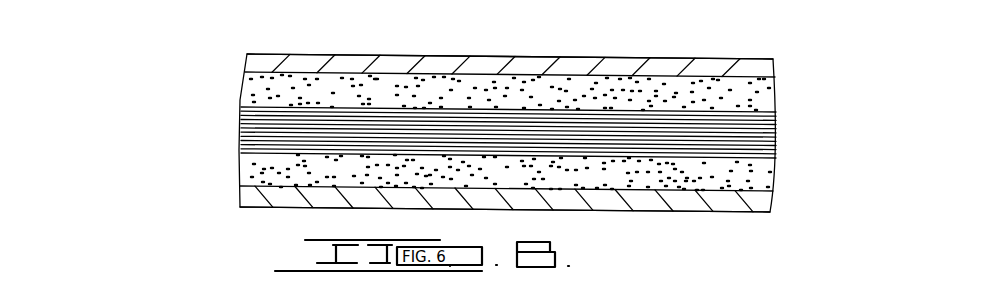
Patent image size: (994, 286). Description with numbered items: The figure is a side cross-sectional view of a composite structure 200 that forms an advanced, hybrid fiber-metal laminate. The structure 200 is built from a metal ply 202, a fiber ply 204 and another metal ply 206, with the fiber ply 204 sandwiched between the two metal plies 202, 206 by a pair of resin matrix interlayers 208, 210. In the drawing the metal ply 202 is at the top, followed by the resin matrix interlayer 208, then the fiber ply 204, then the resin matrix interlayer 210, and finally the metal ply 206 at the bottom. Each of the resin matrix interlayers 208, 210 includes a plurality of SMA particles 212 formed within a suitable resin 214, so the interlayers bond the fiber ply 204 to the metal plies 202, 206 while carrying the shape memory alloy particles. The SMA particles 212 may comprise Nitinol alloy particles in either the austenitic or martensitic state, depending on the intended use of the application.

The composite structure 200 is at (124, 71).
The metal ply 202 is at (236, 65).
The fiber ply 204 is at (232, 138).
The metal ply 206 is at (233, 201).
The resin matrix interlayer 208 is at (232, 97).
The resin matrix interlayer 210 is at (232, 175).
The SMA particles 212 is at (375, 80).
The resin 214 is at (293, 88).